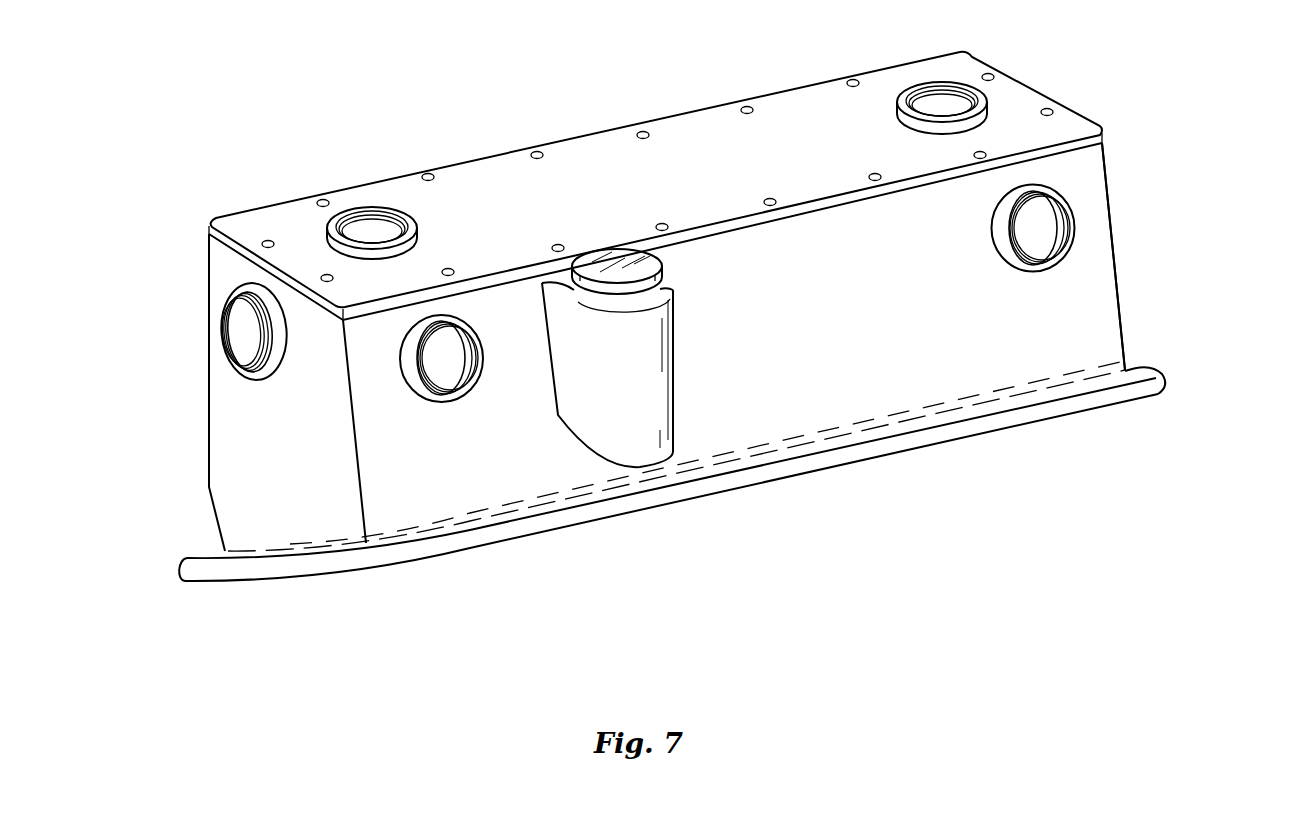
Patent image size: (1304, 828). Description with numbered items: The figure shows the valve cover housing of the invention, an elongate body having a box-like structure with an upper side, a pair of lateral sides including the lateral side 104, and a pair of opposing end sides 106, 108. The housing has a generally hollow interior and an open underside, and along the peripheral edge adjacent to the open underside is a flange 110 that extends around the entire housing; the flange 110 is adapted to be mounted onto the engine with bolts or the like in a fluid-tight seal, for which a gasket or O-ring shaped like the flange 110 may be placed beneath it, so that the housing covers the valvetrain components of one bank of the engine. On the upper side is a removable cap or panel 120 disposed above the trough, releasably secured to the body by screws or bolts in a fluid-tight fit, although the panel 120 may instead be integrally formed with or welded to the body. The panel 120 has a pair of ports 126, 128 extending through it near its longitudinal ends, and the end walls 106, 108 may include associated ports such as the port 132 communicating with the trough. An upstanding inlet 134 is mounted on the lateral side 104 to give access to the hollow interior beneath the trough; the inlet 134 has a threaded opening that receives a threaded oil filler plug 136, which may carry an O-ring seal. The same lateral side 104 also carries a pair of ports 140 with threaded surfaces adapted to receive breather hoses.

The lateral side 104 is at (1200, 369).
The end side 106 is at (1138, 177).
The end side 108 is at (193, 453).
The flange 110 is at (212, 560).
The panel 120 is at (585, 155).
The port 126 is at (987, 97).
The port 128 is at (368, 207).
The port 132 is at (226, 326).
The inlet 134 is at (628, 381).
The oil filler plug 136 is at (663, 266).
The ports 140 is at (470, 400).